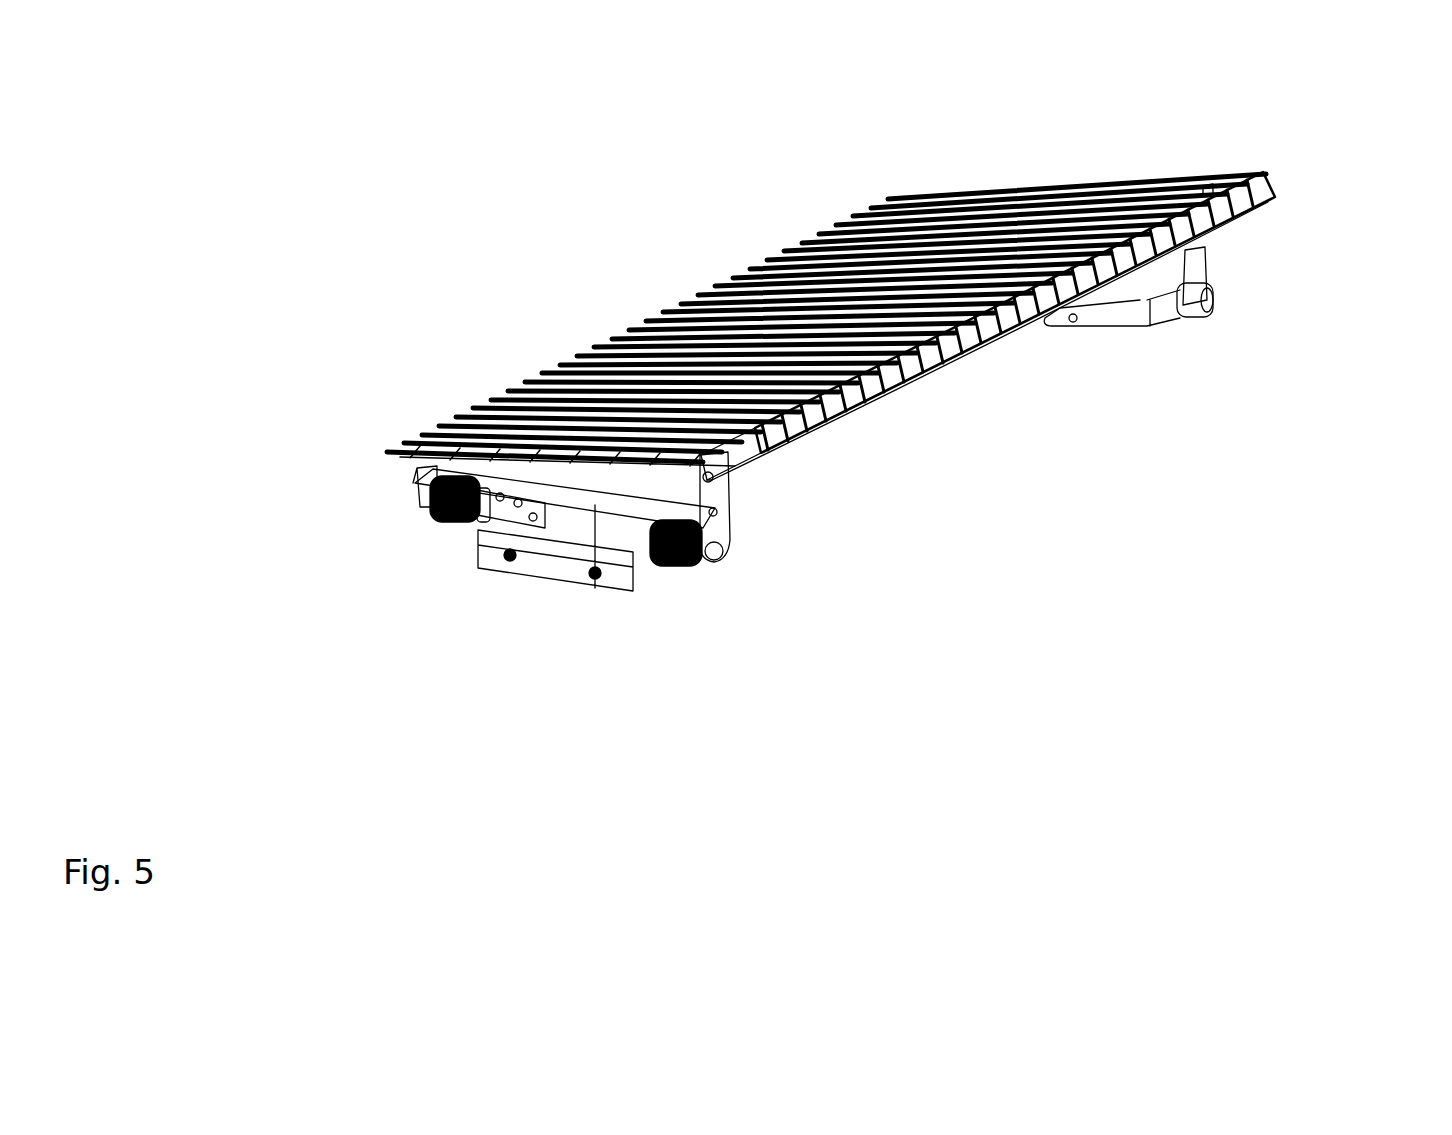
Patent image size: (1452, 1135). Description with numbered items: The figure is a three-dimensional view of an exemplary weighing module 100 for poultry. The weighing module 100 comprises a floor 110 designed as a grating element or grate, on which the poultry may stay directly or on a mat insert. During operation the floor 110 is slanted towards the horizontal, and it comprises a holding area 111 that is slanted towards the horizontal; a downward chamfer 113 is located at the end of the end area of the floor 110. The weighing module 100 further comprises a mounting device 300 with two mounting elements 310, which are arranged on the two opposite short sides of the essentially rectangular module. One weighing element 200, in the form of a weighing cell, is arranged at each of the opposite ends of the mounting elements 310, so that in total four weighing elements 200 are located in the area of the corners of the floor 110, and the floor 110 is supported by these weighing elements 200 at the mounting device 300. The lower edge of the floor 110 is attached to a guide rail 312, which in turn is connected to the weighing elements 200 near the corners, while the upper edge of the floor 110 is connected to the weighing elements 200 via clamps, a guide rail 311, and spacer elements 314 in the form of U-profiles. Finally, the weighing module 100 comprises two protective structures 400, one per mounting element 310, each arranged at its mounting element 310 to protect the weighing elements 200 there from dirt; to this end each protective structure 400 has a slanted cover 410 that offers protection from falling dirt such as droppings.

The weighing module 100 is at (202, 192).
The floor 110 is at (910, 271).
The holding area 111 is at (733, 273).
The downward chamfer 113 is at (1275, 181).
The weighing element 200 is at (457, 530).
The mounting device 300 is at (822, 511).
The mounting element 310 is at (562, 512).
The guide rail 311 is at (1222, 238).
The guide rail 312 is at (420, 465).
The spacer element 314 is at (730, 520).
The protective structure 400 is at (533, 555).
The slanted cover 410 is at (597, 512).